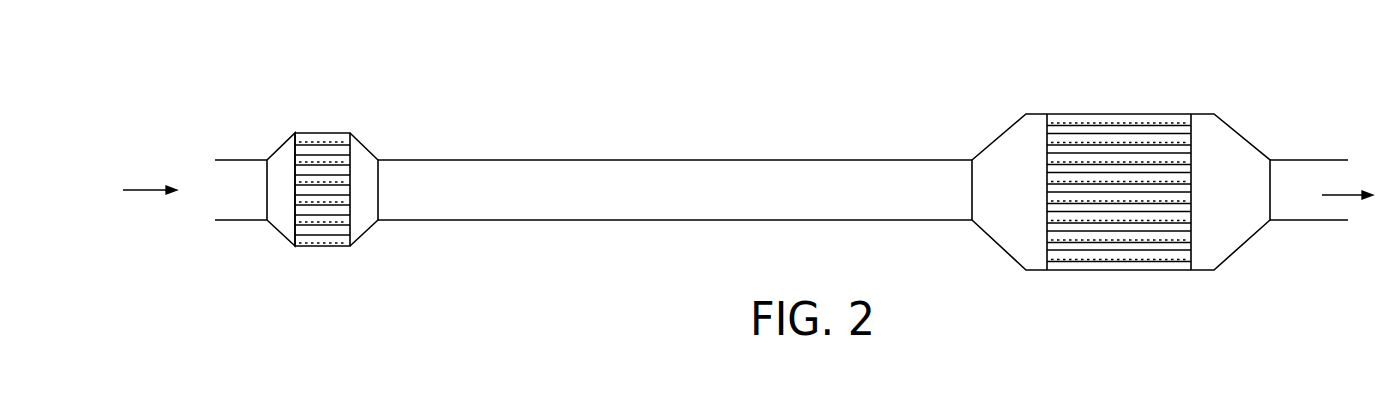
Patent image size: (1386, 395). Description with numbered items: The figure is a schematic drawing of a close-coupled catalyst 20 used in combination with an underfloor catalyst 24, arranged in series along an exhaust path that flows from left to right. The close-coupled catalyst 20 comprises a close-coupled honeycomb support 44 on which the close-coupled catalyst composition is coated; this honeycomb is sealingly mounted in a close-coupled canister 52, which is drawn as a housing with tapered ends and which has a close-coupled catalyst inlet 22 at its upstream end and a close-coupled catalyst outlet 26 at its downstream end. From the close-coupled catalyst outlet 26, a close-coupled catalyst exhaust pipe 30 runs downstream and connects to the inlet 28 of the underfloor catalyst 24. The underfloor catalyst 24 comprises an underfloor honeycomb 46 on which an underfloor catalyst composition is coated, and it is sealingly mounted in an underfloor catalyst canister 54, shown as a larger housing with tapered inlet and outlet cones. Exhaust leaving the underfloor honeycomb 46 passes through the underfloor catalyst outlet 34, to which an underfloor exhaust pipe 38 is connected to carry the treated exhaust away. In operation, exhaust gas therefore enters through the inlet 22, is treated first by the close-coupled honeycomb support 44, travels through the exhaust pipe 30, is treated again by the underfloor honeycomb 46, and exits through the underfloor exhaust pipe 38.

The close-coupled catalyst 20 is at (328, 159).
The close-coupled catalyst inlet 22 is at (264, 158).
The underfloor catalyst 24 is at (1142, 184).
The close-coupled catalyst outlet 26 is at (377, 158).
The inlet of underfloor catalyst 28 is at (972, 160).
The close-coupled catalyst exhaust pipe 30 is at (555, 160).
The underfloor catalyst outlet 34 is at (1270, 160).
The underfloor exhaust pipe 38 is at (1303, 223).
The close-coupled honeycomb support 44 is at (315, 152).
The underfloor honeycomb 46 is at (1093, 132).
The close-coupled canister 52 is at (362, 232).
The underfloor catalyst canister 54 is at (1003, 255).